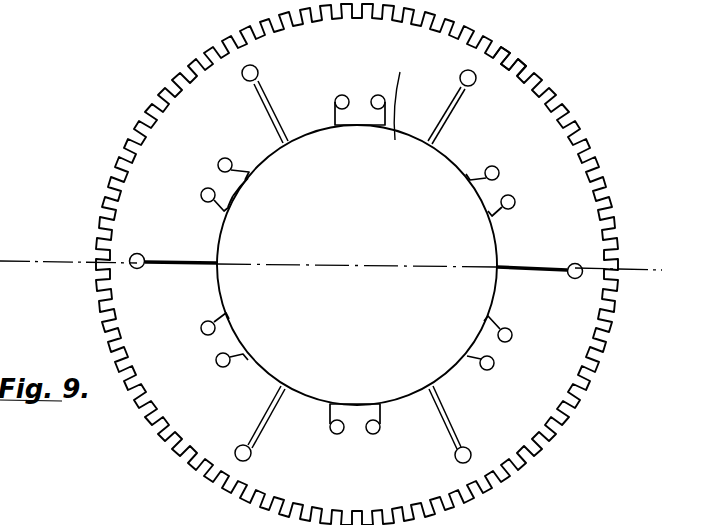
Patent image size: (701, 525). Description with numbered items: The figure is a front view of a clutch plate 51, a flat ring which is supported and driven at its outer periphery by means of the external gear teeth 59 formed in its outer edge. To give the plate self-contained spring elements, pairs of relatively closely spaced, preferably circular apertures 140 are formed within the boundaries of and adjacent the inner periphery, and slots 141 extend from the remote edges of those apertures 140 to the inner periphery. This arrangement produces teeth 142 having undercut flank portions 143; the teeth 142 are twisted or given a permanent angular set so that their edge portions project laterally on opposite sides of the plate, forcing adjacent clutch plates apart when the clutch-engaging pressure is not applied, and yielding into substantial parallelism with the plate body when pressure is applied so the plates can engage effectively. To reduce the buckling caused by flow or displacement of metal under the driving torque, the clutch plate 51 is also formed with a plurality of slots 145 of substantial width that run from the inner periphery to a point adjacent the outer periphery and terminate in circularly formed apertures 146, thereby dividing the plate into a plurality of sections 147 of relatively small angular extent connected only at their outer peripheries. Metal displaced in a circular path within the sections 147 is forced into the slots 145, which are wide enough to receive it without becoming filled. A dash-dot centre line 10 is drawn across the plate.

The axis line 10 is at (343, 267).
The clutch plate 51 is at (457, 62).
The external gear teeth 59 is at (508, 63).
The circular apertures 140 is at (226, 158).
The slots 141 is at (243, 169).
The teeth 142 is at (235, 186).
The undercut flank portions 143 is at (216, 181).
The slots 145 is at (275, 106).
The circularly formed apertures 146 is at (257, 70).
The sections 147 is at (633, 313).